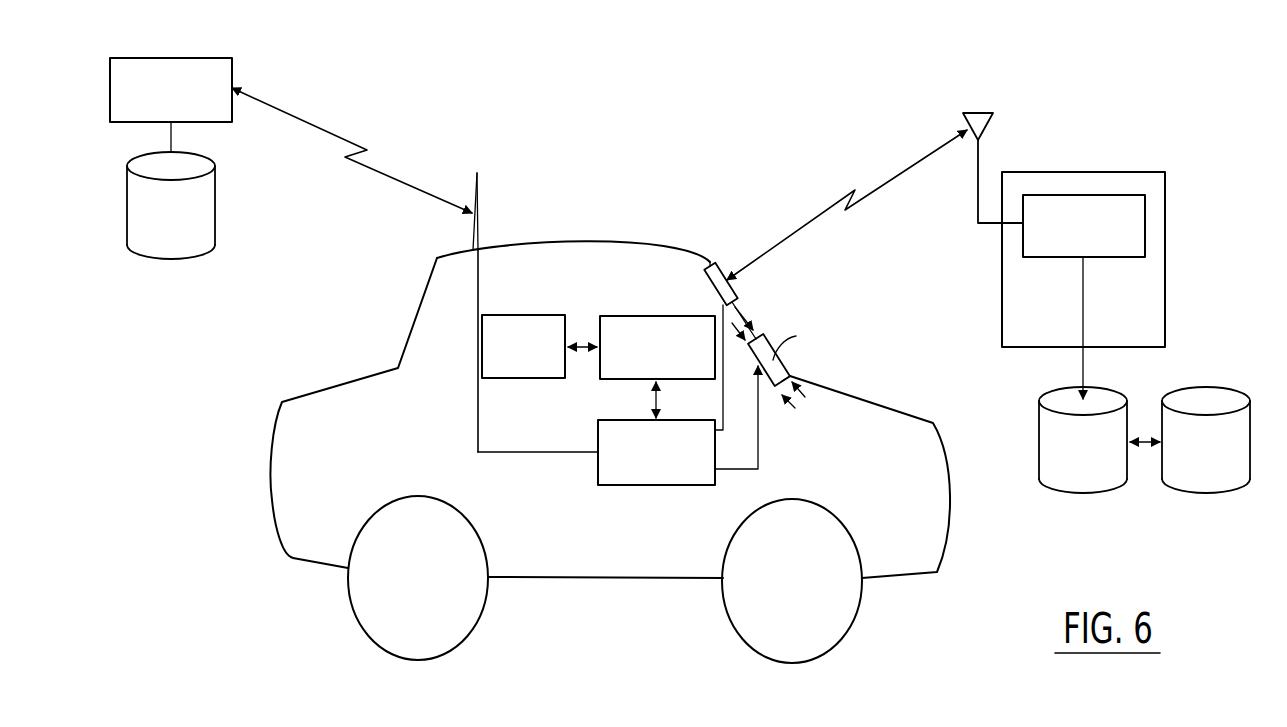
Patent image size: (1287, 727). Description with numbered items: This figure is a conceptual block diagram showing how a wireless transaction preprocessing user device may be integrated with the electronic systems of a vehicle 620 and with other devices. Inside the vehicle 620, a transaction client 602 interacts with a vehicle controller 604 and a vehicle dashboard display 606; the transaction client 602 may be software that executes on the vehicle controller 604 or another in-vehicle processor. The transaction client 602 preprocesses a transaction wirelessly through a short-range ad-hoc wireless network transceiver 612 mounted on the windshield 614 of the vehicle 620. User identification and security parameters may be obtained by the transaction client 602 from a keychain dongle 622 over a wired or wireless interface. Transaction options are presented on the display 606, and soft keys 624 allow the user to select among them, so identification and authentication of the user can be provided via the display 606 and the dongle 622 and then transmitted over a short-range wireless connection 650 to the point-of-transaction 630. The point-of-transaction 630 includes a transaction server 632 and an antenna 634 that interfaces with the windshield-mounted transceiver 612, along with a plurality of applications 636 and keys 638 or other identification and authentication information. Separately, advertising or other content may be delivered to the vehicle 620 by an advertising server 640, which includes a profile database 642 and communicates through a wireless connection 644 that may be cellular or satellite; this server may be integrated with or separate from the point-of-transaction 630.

The transaction client 602 is at (650, 316).
The vehicle controller 604 is at (656, 486).
The vehicle dashboard display 606 is at (776, 388).
The short-range ad-hoc wireless network transceiver 612 is at (723, 278).
The windshield 614 is at (749, 320).
The vehicle 620 is at (406, 453).
The keychain dongle 622 is at (523, 379).
The soft keys 624 is at (738, 304).
The point-of-transaction 630 is at (1165, 270).
The transaction server 632 is at (1065, 258).
The antenna 634 is at (990, 123).
The applications 636 is at (1078, 494).
The keys 638 is at (1203, 494).
The advertising server 640 is at (165, 58).
The profile database 642 is at (216, 212).
The wireless connection 644 is at (416, 188).
The short-range wireless connection 650 is at (887, 180).